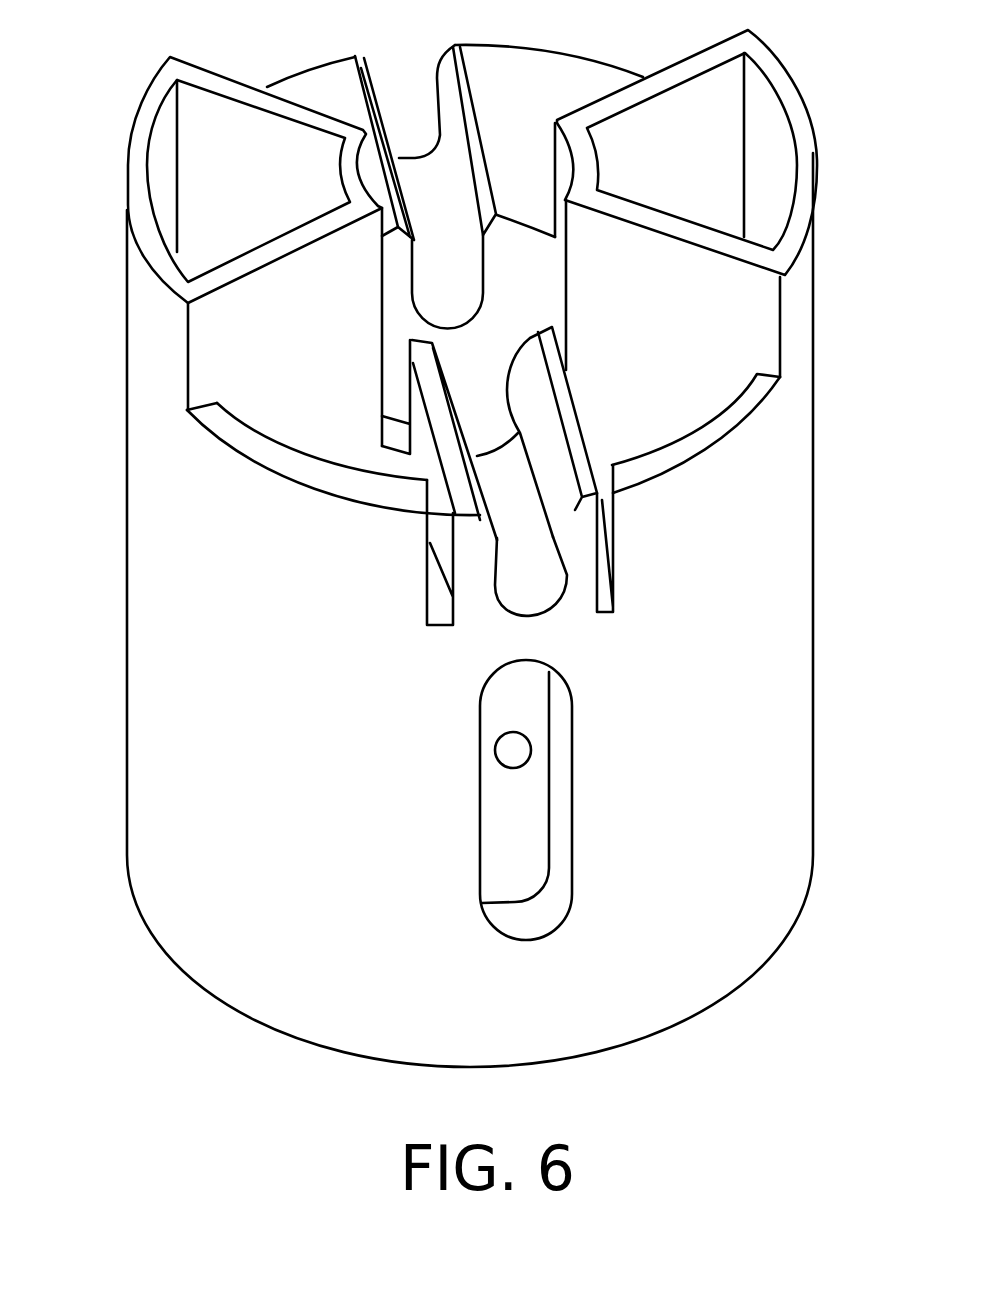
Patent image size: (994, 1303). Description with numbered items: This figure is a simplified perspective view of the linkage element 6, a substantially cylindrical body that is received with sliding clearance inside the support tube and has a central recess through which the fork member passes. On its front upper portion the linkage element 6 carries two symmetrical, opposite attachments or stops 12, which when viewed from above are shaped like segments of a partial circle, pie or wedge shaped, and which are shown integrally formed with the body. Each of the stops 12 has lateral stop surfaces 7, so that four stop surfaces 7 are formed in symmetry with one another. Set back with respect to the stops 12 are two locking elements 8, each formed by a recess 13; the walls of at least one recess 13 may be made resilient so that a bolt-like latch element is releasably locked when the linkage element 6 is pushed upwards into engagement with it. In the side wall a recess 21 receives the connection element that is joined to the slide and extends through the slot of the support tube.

The linkage element 6 is at (800, 737).
The stop surfaces 7 is at (218, 342).
The locking elements 8 is at (455, 102).
The stops 12 is at (135, 155).
The recess 13 is at (427, 168).
The recess 21 is at (537, 830).